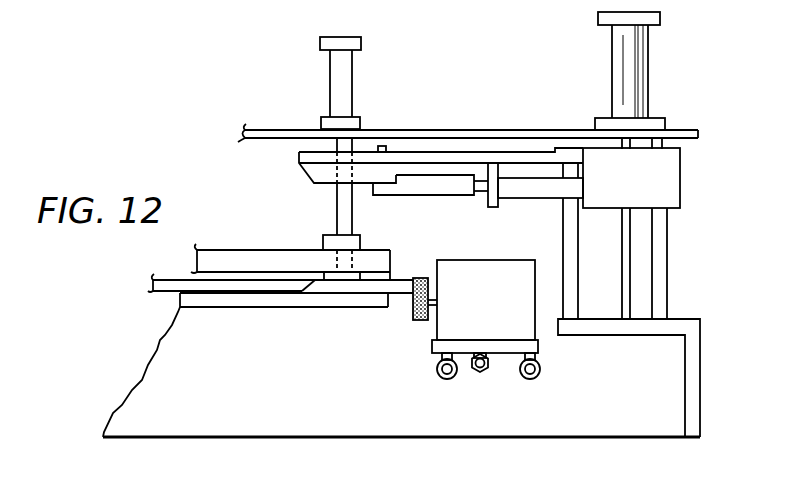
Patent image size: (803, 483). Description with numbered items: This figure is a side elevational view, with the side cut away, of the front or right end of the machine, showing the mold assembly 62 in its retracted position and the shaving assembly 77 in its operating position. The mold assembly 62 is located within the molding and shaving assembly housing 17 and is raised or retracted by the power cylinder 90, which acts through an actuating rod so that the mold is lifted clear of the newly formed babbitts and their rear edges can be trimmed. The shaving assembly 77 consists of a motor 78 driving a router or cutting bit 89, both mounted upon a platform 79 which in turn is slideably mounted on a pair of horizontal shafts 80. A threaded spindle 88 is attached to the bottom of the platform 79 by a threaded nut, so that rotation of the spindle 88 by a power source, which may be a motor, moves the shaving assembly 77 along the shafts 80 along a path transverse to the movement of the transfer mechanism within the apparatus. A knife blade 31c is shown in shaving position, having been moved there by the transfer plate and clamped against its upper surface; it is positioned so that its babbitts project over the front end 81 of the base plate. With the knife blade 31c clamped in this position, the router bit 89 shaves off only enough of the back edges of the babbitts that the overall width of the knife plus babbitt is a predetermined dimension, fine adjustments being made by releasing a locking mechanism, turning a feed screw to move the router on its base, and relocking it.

The actuating cylinder 90 is at (625, 37).
The molding and shaving assembly housing 17 is at (683, 129).
The mold assembly 62 is at (682, 172).
The router or cutting bit 89 is at (422, 283).
The motor 78 is at (478, 283).
The shaving assembly 77 is at (537, 295).
The knife blade 31c is at (320, 292).
The front end of the base plate 81 is at (393, 300).
The platform 79 is at (540, 346).
The horizontal shafts 80 is at (437, 373).
The threaded spindle 88 is at (482, 374).